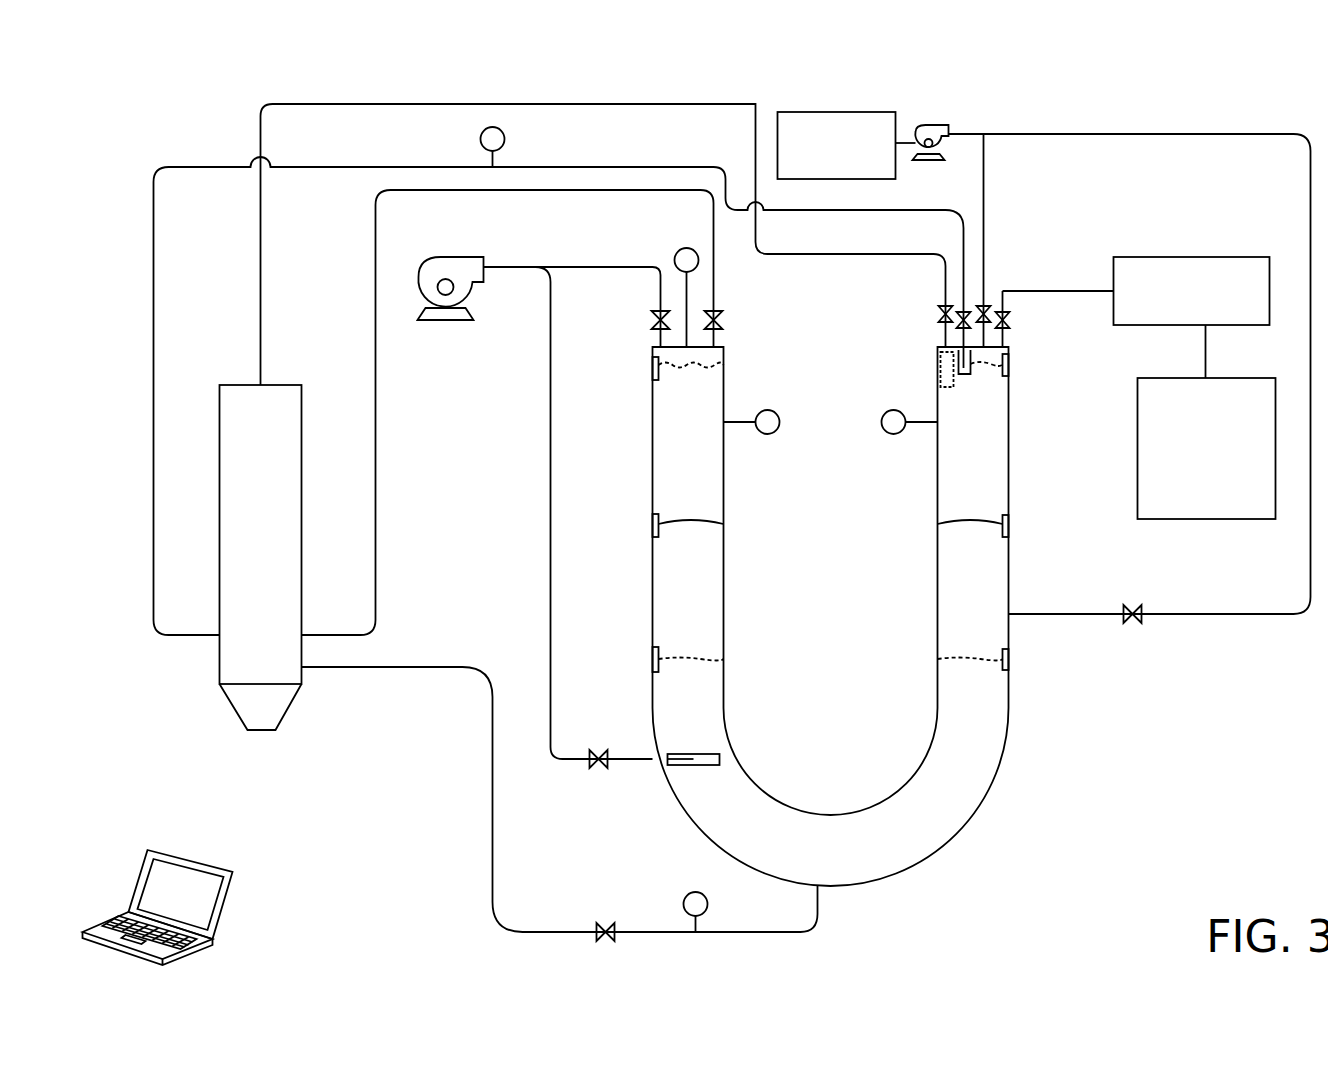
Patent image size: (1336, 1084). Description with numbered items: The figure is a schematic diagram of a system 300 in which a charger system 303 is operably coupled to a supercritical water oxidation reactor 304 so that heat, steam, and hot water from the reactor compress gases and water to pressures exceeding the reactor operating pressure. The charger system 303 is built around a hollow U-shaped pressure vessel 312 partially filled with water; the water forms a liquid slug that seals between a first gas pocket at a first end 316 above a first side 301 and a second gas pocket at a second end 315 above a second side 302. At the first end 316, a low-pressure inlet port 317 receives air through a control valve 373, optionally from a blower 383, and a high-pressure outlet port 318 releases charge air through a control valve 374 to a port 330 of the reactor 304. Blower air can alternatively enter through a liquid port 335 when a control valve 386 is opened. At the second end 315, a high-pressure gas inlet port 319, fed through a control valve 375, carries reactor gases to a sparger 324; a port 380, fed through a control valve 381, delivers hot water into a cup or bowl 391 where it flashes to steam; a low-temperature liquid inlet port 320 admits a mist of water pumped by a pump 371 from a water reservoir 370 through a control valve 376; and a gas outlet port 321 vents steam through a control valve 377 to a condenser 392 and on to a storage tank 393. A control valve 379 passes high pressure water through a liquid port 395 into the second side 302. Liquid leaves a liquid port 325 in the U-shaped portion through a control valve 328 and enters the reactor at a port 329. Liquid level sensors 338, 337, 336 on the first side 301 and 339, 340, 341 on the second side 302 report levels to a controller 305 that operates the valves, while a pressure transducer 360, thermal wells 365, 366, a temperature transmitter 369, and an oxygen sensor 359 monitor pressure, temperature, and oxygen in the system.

The system 300 is at (1230, 775).
The first side of the vessel 301 is at (623, 472).
The second side of the vessel 302 is at (1030, 478).
The charger system 303 is at (1037, 760).
The supercritical water oxidation reactor 304 is at (219, 465).
The controller 305 is at (137, 880).
The U-shaped pressure vessel 312 is at (962, 826).
The second end of the vessel 315 is at (1012, 352).
The first end of the vessel 316 is at (705, 350).
The low-pressure inlet port 317 is at (655, 345).
The high-pressure outlet port 318 is at (720, 345).
The high-pressure gas inlet port 319 is at (945, 343).
The low-temperature liquid inlet port 320 is at (1010, 328).
The gas outlet port 321 is at (1010, 345).
The sparger 324 is at (940, 394).
The liquid port 325 is at (815, 884).
The control valve 328 is at (607, 922).
The port 329 is at (303, 665).
The port 330 is at (303, 633).
The liquid port 335 is at (672, 752).
The liquid level sensor 336 is at (652, 657).
The liquid level sensor 337 is at (652, 523).
The liquid level sensor 338 is at (653, 365).
The liquid level sensor 339 is at (1010, 657).
The liquid level sensor 340 is at (1010, 522).
The liquid level sensor 341 is at (1012, 372).
The oxygen sensor 359 is at (490, 125).
The pressure transducer 360 is at (676, 250).
The thermal well 365 is at (767, 433).
The thermal well 366 is at (893, 433).
The temperature transmitter 369 is at (688, 890).
The water reservoir 370 is at (845, 177).
The pump 371 is at (941, 158).
The control valve 373 is at (652, 315).
The control valve 374 is at (720, 316).
The control valve 375 is at (940, 303).
The control valve 376 is at (990, 303).
The control valve 377 is at (1006, 306).
The control valve 379 is at (1136, 604).
The port 380 is at (960, 340).
The control valve 381 is at (963, 306).
The blower 383 is at (442, 320).
The control valve 386 is at (598, 766).
The cup or bowl 391 is at (962, 382).
The condenser 392 is at (1158, 255).
The storage tank 393 is at (1225, 376).
The liquid port 395 is at (1010, 612).